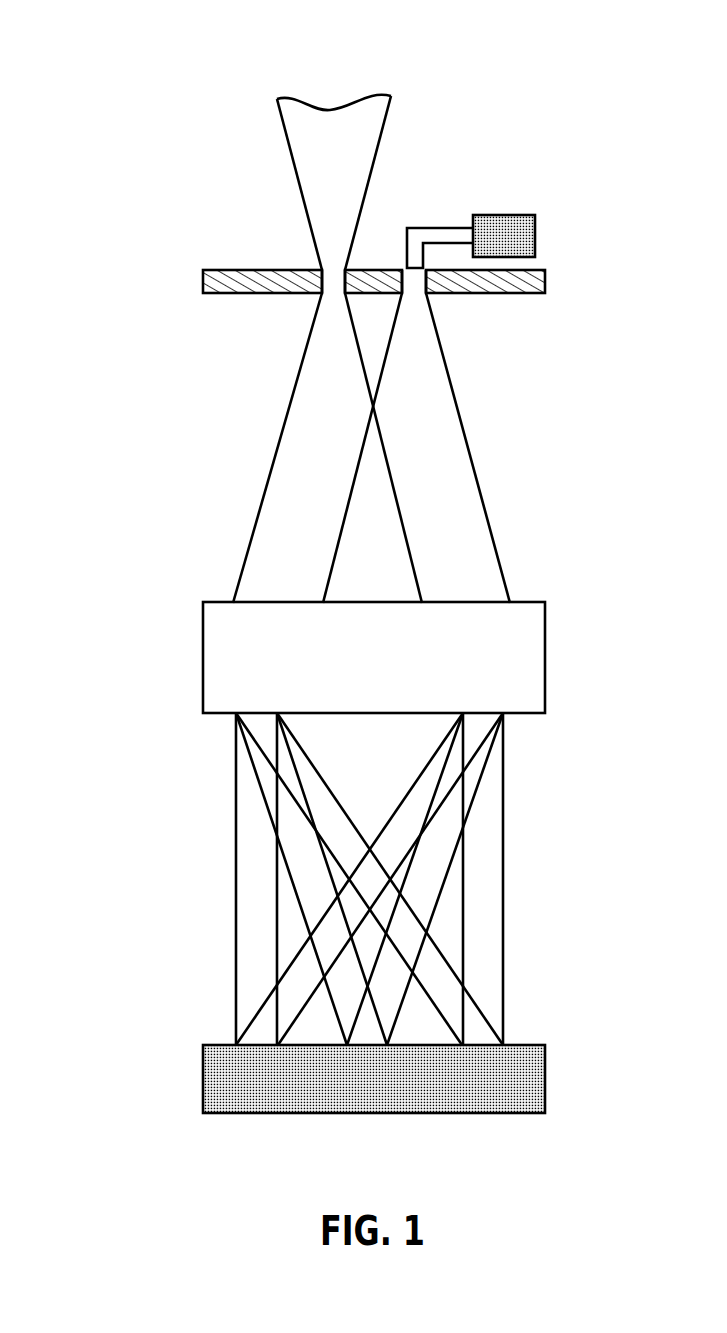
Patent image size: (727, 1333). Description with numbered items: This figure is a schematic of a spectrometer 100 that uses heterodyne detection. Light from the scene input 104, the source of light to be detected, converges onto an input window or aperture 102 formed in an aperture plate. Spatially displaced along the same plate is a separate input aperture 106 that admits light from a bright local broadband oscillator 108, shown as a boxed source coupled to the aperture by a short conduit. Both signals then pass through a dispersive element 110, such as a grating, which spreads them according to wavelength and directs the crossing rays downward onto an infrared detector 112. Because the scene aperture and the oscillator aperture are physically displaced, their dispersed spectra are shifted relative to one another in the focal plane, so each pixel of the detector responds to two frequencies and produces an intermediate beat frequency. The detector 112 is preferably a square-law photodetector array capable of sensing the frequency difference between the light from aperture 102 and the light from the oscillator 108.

The spectrometer 100 is at (192, 42).
The input window or aperture 102 is at (318, 256).
The scene input 104 is at (335, 145).
The input aperture 106 is at (426, 306).
The bright local broadband oscillator 108 is at (510, 233).
The dispersive element 110 is at (393, 669).
The infrared detector 112 is at (393, 1094).